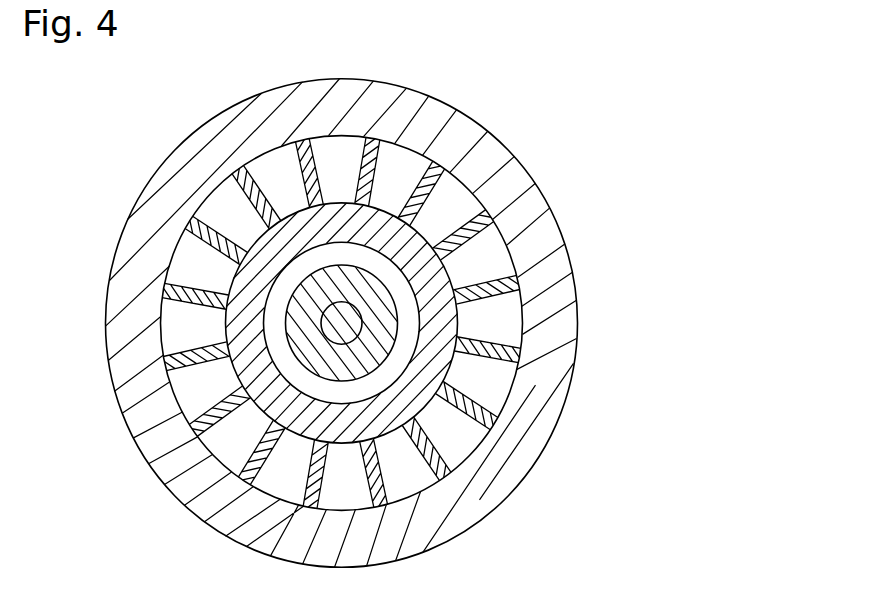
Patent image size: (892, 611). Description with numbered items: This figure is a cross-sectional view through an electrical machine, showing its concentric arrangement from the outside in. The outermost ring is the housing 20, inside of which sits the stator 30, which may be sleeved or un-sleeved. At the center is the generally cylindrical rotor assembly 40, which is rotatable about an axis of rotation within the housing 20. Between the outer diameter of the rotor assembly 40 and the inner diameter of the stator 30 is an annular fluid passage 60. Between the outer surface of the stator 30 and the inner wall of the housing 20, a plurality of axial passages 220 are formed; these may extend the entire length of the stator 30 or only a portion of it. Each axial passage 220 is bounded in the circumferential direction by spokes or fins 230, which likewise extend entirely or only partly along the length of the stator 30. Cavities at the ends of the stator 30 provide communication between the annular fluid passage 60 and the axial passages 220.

The housing 20 is at (513, 165).
The stator 30 is at (437, 247).
The rotor assembly 40 is at (305, 345).
The annular fluid passage 60 is at (443, 418).
The axial passages 220 is at (483, 377).
The spokes or fins 230 is at (482, 305).